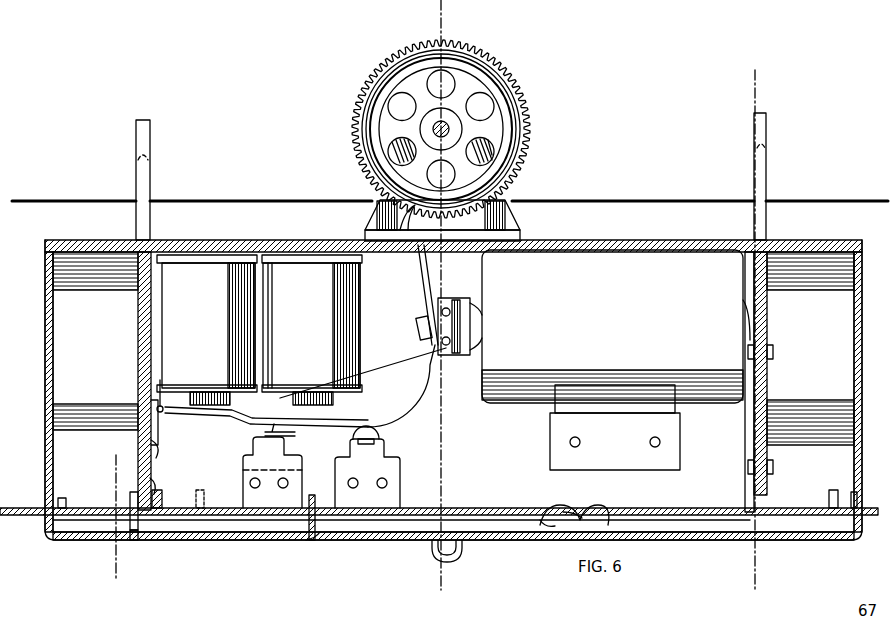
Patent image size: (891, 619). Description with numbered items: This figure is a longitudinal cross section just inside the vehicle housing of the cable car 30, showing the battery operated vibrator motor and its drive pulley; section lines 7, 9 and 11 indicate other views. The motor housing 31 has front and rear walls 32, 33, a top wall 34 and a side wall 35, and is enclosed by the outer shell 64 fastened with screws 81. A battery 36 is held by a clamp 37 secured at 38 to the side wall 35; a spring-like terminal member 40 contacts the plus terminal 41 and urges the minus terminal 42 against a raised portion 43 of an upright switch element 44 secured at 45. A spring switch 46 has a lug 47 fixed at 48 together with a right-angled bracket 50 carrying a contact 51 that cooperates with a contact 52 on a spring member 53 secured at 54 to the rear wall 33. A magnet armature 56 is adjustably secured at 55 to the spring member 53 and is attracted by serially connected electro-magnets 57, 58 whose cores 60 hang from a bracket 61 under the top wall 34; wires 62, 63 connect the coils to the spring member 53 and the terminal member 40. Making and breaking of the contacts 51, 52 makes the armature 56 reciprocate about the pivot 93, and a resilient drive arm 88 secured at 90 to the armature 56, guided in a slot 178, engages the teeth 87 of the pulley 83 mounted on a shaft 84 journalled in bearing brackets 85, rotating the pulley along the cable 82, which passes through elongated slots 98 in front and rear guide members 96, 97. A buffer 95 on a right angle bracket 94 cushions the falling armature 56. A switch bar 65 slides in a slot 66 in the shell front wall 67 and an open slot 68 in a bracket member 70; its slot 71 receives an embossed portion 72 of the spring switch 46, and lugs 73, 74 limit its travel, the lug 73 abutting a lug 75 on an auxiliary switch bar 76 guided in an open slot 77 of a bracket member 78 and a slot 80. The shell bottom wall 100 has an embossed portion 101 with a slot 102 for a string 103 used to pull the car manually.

The section line 7- 7 is at (766, 94).
The section line 9- 9 is at (108, 485).
The section line 11- 11 is at (455, 26).
The cable car 30 is at (316, 241).
The motor housing 31 is at (612, 250).
The front wall 32 is at (752, 290).
The rear wall 33 is at (144, 310).
The top wall 34 is at (228, 246).
The side wall 35 is at (152, 352).
The battery 36 is at (672, 268).
The clamp 37 is at (568, 404).
The securing point of clamp 38 is at (655, 440).
The terminal member 40 is at (460, 352).
The plus terminal 41 is at (478, 305).
The minus terminal 42 is at (750, 304).
The raised portion 43 is at (752, 322).
The switch element 44 is at (758, 412).
The securing point of switch element 45 is at (772, 362).
The spring switch 46 is at (636, 508).
The lug 47 is at (238, 472).
The fixing point 48 is at (272, 486).
The right-angled bracket 50 is at (248, 460).
The contact 51 is at (272, 472).
The contact 52 is at (288, 438).
The spring member 53 is at (222, 420).
The securing point of spring member 54 is at (150, 452).
The adjustable securing point 55 is at (172, 400).
The magnet armature 56 is at (392, 400).
The electro-magnet 57 is at (168, 328).
The electro-magnet 58 is at (335, 322).
The cores 60 is at (293, 398).
The bracket 61 is at (260, 246).
The wire 62 is at (145, 386).
The wire 63 is at (380, 422).
The shell 64 is at (46, 446).
The switch bar 65 is at (680, 510).
The slot 66 is at (858, 508).
The front wall 67 is at (858, 412).
The open slot 68 is at (318, 500).
The bracket member 70 is at (318, 540).
The slot 71 is at (550, 504).
The embossed portion 72 is at (572, 520).
The lug 73 is at (158, 500).
The lug 74 is at (830, 500).
The lug 75 is at (150, 488).
The auxiliary switch bar 76 is at (32, 506).
The open slot 77 is at (126, 500).
The bracket member 78 is at (138, 538).
The slot 80 is at (58, 508).
The screws 81 is at (44, 262).
The cable 82 is at (266, 202).
The pulley 83 is at (512, 128).
The shaft 84 is at (450, 129).
The bearing brackets 85 is at (505, 222).
The teeth 87 is at (510, 78).
The drive arm 88 is at (418, 270).
The securing point of drive arm 90 is at (418, 326).
The pivot 93 is at (148, 430).
The right angle bracket 94 is at (390, 470).
The buffer 95 is at (382, 432).
The front guide member 96 is at (148, 176).
The rear guide member 97 is at (758, 166).
The elongated slot 98 is at (150, 160).
The bottom wall 100 is at (466, 550).
The embossed portion 101 is at (434, 552).
The slot 102 is at (436, 558).
The string 103 is at (430, 561).
The slot 178 is at (362, 235).